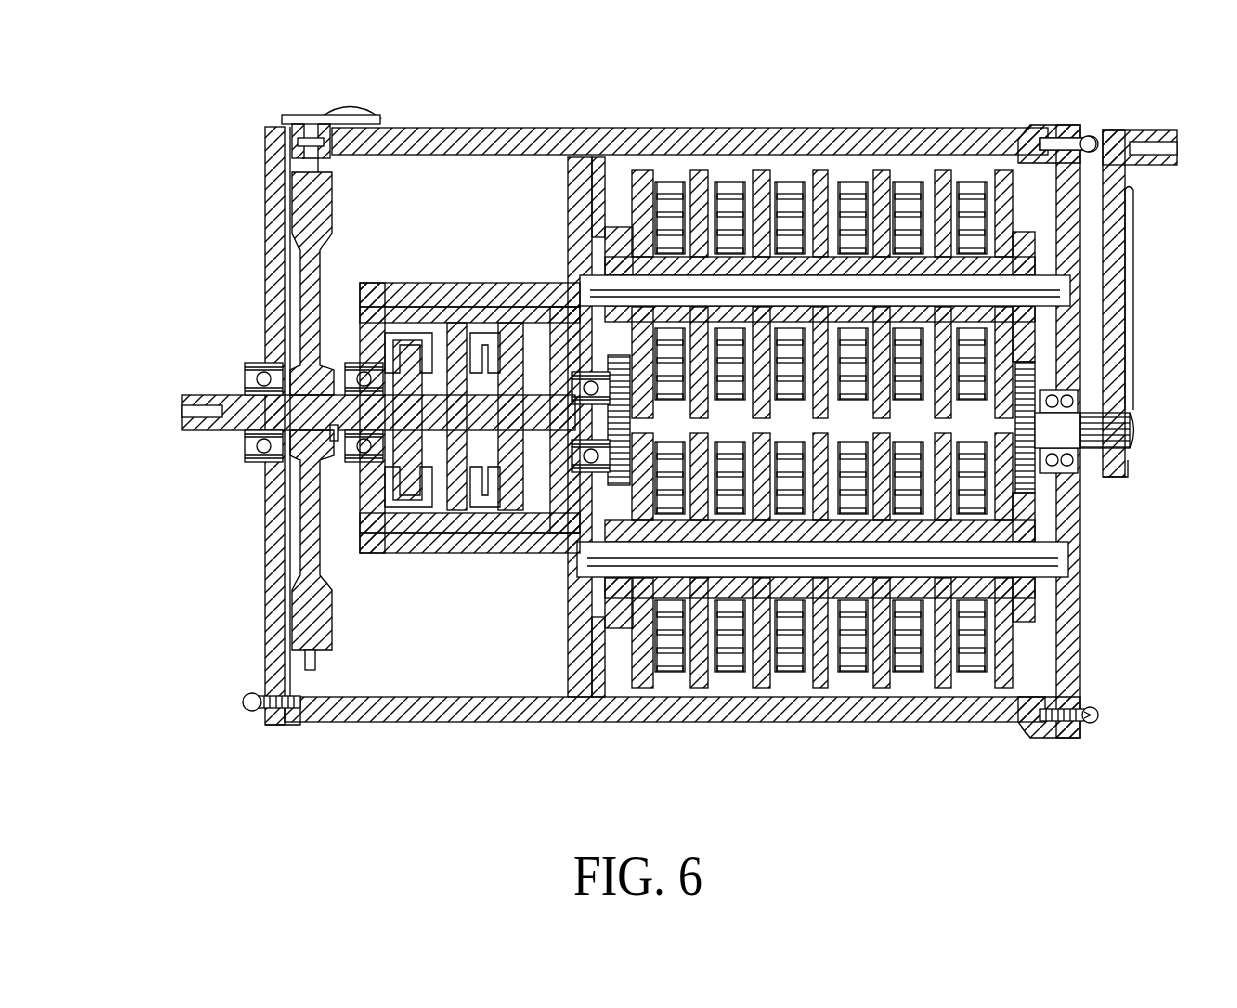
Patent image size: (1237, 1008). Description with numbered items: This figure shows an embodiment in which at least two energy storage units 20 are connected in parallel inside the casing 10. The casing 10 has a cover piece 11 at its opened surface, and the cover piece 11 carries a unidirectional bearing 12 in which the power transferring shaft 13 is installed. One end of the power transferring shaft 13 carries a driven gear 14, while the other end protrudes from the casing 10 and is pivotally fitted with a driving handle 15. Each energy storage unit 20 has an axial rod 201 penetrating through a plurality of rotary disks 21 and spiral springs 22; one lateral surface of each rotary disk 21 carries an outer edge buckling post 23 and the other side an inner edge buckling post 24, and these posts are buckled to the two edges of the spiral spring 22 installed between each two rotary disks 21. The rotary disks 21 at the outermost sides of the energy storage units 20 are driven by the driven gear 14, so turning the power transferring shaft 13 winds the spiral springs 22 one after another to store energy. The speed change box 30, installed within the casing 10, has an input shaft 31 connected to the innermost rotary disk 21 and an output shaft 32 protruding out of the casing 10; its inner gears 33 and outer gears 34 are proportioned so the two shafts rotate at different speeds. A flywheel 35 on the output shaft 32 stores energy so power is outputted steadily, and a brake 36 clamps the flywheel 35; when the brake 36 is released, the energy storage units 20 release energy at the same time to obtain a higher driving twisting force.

The casing 10 is at (812, 710).
The cover piece 11 is at (1065, 130).
The unidirectional bearing 12 is at (1075, 465).
The power transferring shaft 13 is at (1130, 430).
The driven gear 14 is at (1040, 480).
The driving handle 15 is at (1128, 215).
The energy storage unit 20 is at (609, 184).
The rotary disk 21 is at (642, 172).
The spiral spring 22 is at (845, 190).
The outer edge buckling post 23 is at (770, 188).
The inner edge buckling post 24 is at (660, 690).
The axial rod 201 is at (1068, 293).
The speed change box 30 is at (510, 300).
The input shaft 31 is at (590, 465).
The output shaft 32 is at (208, 430).
The inner gear 33 is at (408, 510).
The outer gear 34 is at (512, 330).
The flywheel 35 is at (322, 215).
The brake 36 is at (345, 112).